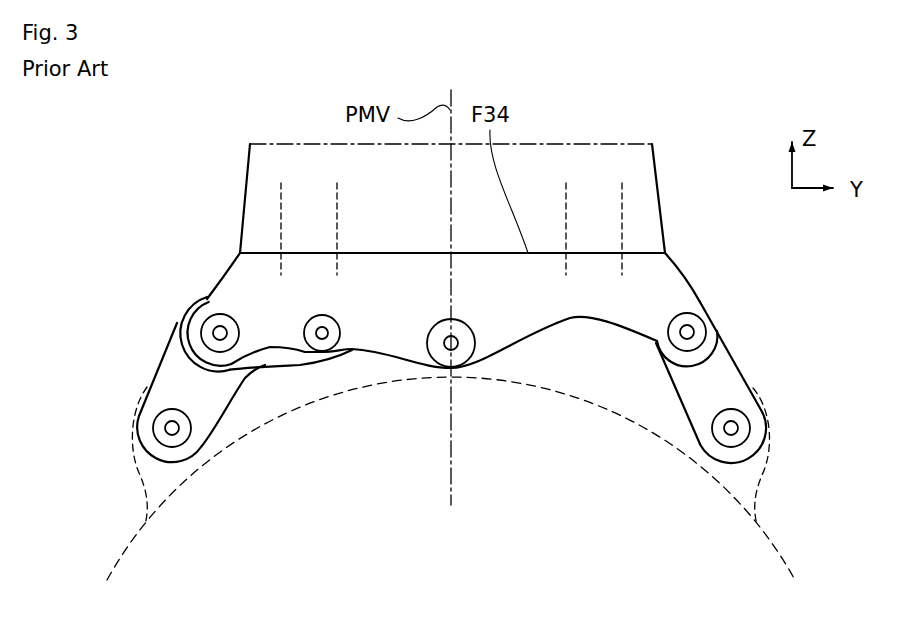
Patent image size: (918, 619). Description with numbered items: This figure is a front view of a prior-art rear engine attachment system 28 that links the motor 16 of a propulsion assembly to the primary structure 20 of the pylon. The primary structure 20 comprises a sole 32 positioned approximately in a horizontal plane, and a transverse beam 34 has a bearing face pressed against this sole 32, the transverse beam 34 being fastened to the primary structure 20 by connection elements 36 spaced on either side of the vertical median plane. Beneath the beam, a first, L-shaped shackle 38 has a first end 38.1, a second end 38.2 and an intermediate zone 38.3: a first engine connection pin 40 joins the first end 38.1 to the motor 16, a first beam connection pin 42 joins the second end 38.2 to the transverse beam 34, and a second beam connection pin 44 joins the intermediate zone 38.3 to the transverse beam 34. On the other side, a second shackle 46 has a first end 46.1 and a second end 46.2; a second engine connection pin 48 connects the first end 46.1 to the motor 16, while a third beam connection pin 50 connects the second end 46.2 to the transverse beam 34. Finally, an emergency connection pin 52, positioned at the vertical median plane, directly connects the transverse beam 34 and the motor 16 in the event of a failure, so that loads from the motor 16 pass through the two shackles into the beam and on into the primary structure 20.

The motor 16 is at (787, 542).
The primary structure 20 is at (548, 152).
The rear engine attachment system 28 is at (168, 212).
The sole 32 is at (307, 262).
The transverse beam 34 is at (393, 302).
The connection elements 36 is at (336, 198).
The first L-shaped shackle 38 is at (230, 397).
The first end of the first shackle 38.1 is at (132, 426).
The second end of the first shackle 38.2 is at (332, 364).
The intermediate zone of the first shackle 38.3 is at (178, 315).
The first engine connection pin 40 is at (163, 432).
The first beam connection pin 42 is at (320, 342).
The second beam connection pin 44 is at (231, 347).
The second shackle 46 is at (745, 374).
The first end of the second shackle 46.1 is at (766, 449).
The second end of the second shackle 46.2 is at (719, 314).
The second engine connection pin 48 is at (746, 416).
The third beam connection pin 50 is at (691, 326).
The emergency connection pin 52 is at (461, 352).